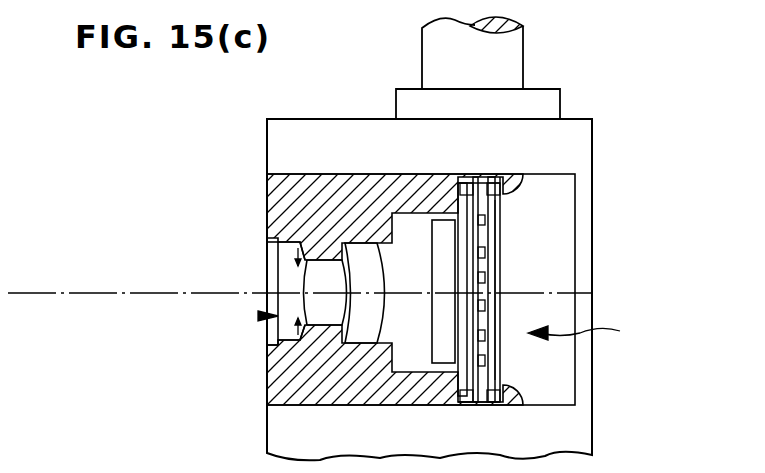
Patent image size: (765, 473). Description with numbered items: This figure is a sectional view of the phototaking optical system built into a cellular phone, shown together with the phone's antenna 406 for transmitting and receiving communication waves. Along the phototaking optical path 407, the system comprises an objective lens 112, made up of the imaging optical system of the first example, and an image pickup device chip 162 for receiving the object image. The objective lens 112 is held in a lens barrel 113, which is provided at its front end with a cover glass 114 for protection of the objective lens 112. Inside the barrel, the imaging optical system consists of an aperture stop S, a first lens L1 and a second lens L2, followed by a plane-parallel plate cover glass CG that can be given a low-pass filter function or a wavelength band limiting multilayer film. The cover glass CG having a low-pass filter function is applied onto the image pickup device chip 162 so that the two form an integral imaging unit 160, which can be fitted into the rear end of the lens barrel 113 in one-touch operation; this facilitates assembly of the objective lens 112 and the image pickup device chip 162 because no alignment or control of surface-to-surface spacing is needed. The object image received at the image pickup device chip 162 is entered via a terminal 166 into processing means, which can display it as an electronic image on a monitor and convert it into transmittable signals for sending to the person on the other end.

The antenna 406 is at (512, 46).
The phototaking optical path 407 is at (58, 292).
The lens barrel 113 is at (356, 195).
The cover glass 114 is at (272, 270).
The objective lens 112 is at (260, 316).
The integral imaging unit 160 is at (568, 289).
The image pickup device chip 162 is at (490, 293).
The terminal 166 is at (486, 214).
The aperture stop S is at (300, 342).
The first lens L1 is at (328, 338).
The second lens L2 is at (372, 340).
The cover glass CG is at (446, 364).